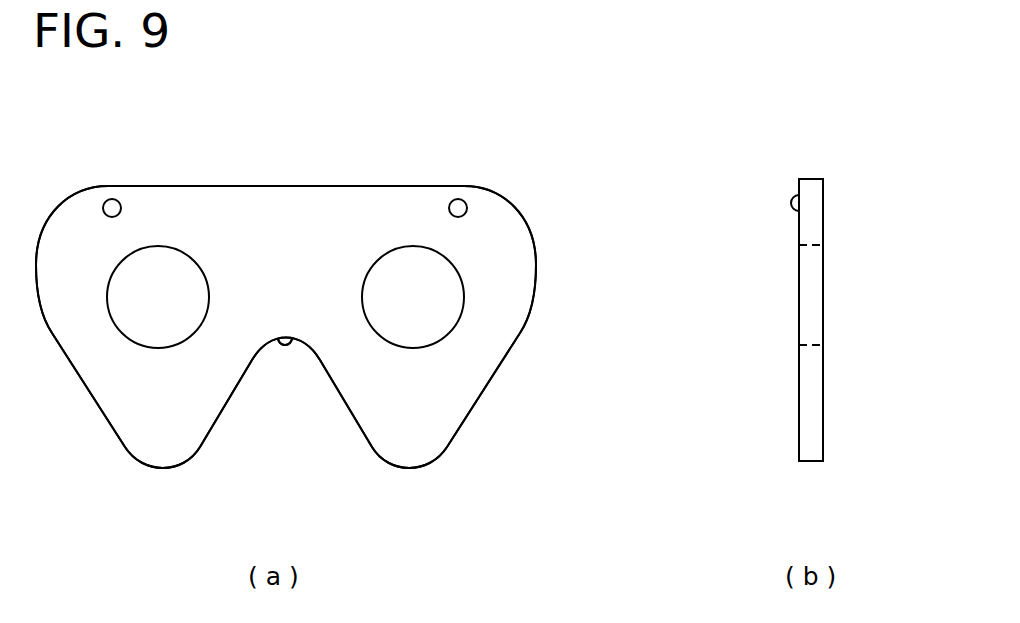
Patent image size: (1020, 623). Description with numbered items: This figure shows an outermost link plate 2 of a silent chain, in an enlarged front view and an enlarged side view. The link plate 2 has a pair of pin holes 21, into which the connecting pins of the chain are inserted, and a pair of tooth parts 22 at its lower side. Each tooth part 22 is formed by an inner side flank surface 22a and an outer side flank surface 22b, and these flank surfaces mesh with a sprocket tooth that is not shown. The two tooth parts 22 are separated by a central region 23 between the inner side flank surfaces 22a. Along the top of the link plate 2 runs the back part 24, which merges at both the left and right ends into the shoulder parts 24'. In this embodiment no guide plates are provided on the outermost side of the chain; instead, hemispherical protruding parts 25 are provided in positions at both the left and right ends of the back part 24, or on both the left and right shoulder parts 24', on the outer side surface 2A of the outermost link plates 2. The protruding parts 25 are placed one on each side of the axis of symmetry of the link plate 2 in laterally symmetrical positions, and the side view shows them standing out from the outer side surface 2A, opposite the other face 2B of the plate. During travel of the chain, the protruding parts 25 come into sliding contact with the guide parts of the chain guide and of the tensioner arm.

The link plate 2 is at (308, 155).
The pin holes 21 is at (112, 312).
The tooth parts 22 is at (159, 460).
The inner side flank surface 22a is at (363, 440).
The outer side flank surface 22b is at (470, 408).
The central notch 23 is at (294, 340).
The back part 24 is at (286, 157).
The shoulder parts 24' is at (293, 250).
The hemispherical protruding parts 25 is at (107, 198).
The outer side surface 2A is at (799, 448).
The rear surface 2B is at (823, 448).